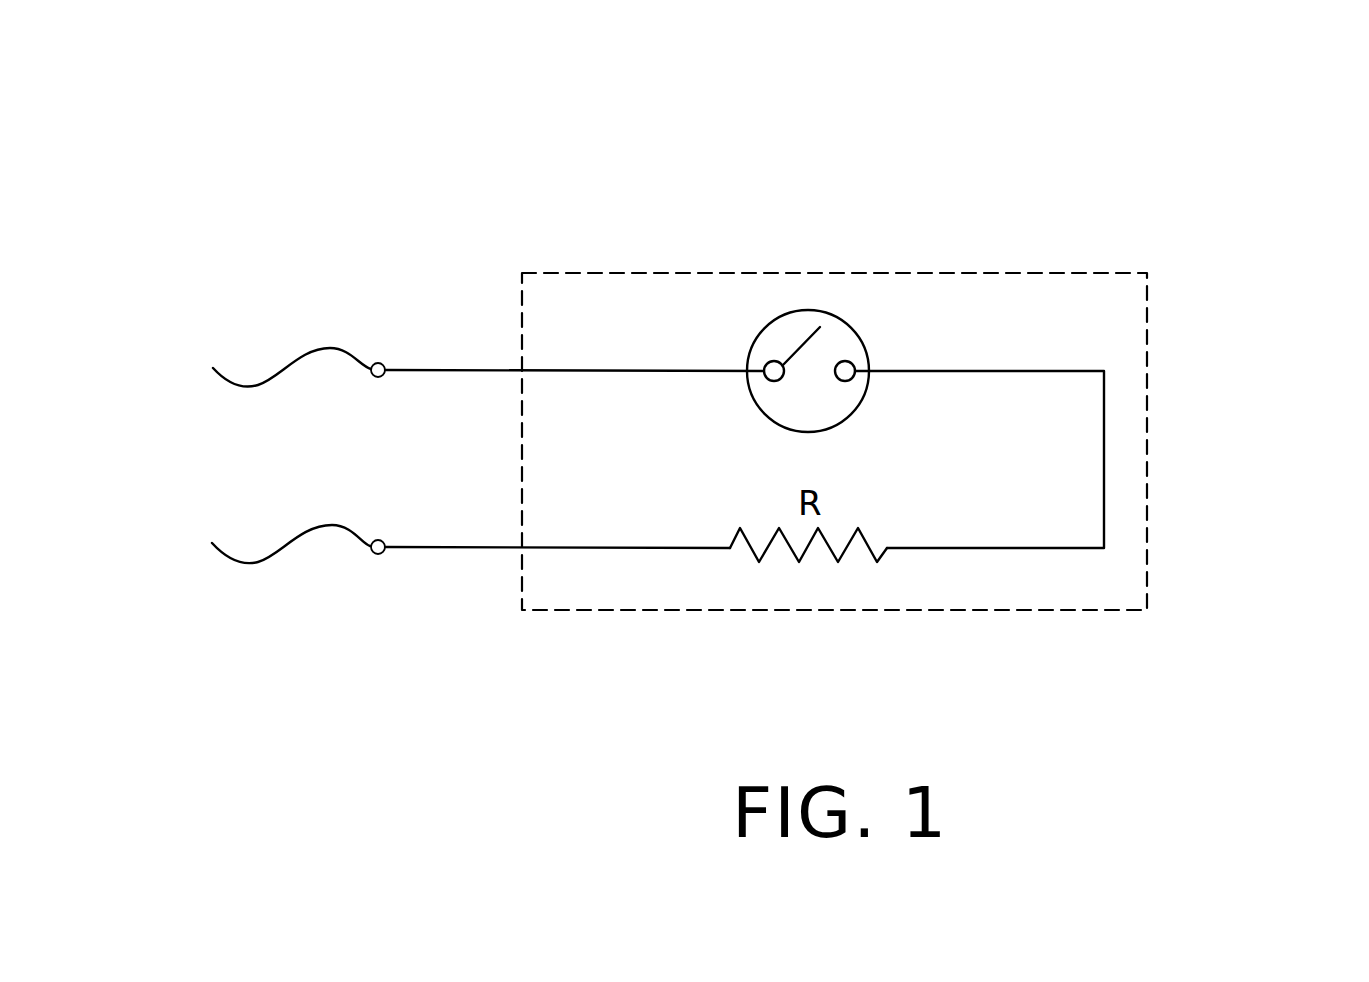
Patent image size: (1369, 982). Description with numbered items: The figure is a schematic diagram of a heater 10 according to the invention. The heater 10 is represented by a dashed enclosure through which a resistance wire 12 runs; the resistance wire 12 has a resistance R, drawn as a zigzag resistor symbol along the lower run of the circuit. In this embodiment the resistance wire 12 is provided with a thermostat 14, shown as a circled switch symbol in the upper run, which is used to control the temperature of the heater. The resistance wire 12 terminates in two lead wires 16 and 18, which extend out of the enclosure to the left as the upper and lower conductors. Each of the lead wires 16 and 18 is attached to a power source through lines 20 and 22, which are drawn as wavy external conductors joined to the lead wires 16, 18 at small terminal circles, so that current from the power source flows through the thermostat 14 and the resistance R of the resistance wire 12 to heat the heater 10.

The heater 10 is at (935, 455).
The resistance wire 12 is at (1102, 459).
The thermostat 14 is at (883, 275).
The lead wire 16 is at (525, 268).
The lead wire 18 is at (506, 646).
The line 20 is at (218, 596).
The line 22 is at (240, 315).